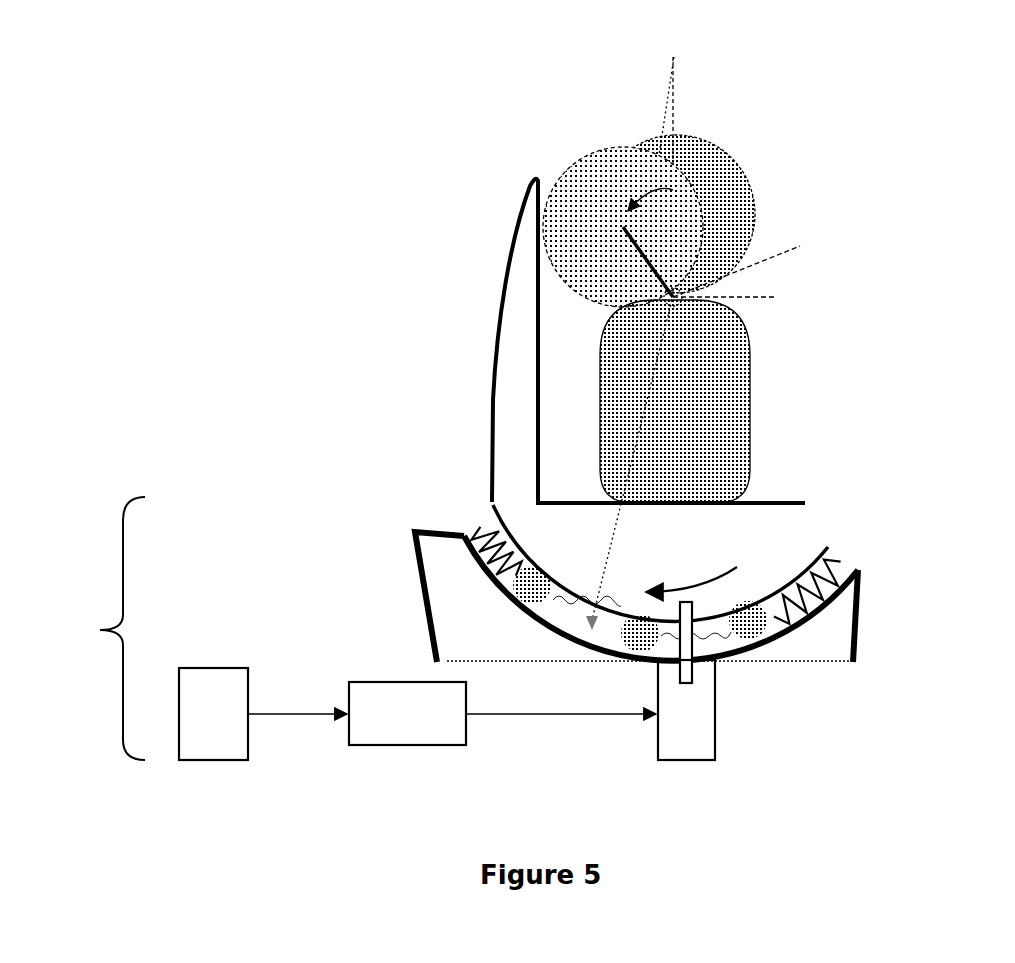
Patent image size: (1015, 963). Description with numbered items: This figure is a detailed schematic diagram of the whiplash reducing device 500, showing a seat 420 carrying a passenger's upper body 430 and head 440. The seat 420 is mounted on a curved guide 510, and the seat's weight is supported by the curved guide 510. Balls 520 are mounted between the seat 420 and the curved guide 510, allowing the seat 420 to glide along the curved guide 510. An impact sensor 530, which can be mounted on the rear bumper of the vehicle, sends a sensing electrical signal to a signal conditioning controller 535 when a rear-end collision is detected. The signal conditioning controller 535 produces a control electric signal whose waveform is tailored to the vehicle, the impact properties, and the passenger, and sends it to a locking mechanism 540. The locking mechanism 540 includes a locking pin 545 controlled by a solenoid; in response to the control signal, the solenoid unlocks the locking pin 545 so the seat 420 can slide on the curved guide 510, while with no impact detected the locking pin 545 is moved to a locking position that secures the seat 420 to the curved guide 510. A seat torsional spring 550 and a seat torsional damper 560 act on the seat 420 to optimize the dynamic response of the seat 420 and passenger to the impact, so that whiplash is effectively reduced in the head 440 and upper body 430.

The whiplash reducing device 500 is at (91, 628).
The curved guide 510 is at (858, 576).
The balls 520 is at (754, 631).
The impact sensor 530 is at (263, 714).
The signal conditioning controller 535 is at (502, 713).
The locking mechanism 540 is at (719, 721).
The locking pin 545 is at (695, 666).
The seat torsional spring 550 is at (568, 612).
The seat torsional damper 560 is at (462, 528).
The seat 420 is at (798, 532).
The upper body 430 is at (742, 399).
The head 440 is at (728, 156).